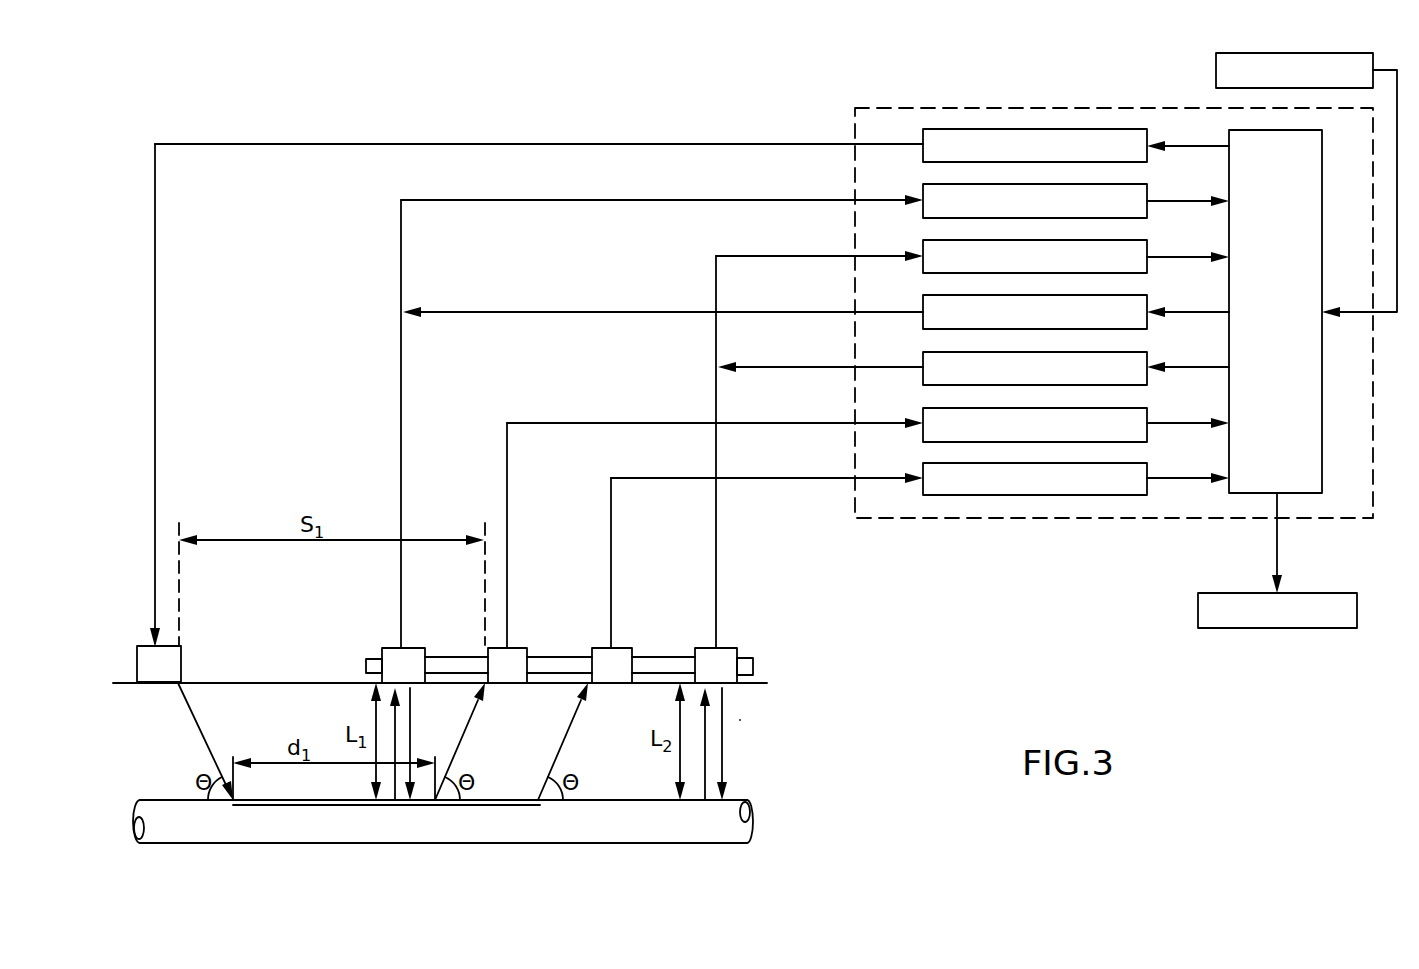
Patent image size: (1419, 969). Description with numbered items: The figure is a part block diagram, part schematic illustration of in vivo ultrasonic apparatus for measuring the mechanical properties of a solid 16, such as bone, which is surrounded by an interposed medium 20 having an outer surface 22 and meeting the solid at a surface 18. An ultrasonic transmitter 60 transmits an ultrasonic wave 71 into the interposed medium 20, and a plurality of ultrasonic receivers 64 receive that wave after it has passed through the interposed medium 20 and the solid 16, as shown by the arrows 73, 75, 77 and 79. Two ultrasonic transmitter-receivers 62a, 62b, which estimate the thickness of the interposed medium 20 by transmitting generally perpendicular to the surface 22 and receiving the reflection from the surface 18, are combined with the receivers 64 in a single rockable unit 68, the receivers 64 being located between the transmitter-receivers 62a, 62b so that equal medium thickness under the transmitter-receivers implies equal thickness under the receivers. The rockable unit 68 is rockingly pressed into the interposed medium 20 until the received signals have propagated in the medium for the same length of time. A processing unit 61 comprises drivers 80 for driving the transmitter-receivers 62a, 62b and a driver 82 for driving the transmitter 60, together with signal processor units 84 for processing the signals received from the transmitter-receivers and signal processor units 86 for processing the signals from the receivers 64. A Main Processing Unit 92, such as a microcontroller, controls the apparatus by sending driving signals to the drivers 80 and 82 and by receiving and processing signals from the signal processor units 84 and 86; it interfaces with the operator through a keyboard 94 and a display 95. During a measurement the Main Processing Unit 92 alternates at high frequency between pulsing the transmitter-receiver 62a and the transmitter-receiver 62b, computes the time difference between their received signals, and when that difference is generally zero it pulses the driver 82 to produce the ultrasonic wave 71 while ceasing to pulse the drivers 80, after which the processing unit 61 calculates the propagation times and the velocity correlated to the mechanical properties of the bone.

The solid 16 is at (752, 832).
The surface 18 is at (738, 798).
The interposed medium 20 is at (753, 735).
The surface of the interposed medium 22 is at (762, 683).
The ultrasonic transmitter 60 is at (183, 666).
The processing unit 61 is at (1062, 518).
The transmitter-receiver 62a is at (412, 650).
The transmitter-receiver 62b is at (737, 650).
The ultrasonic receivers 64 is at (528, 655).
The rockable unit 68 is at (753, 660).
The ultrasonic wave 71 is at (203, 748).
The arrow 73 is at (310, 806).
The arrow 75 is at (462, 748).
The arrow 77 is at (470, 806).
The arrow 79 is at (567, 748).
The drivers 80 is at (923, 297).
The driver 82 is at (927, 129).
The signal processor units 84 is at (923, 186).
The signal processor units 86 is at (923, 410).
The Main Processing Unit (MPU) 92 is at (1322, 480).
The keyboard 94 is at (1216, 72).
The display 95 is at (1198, 603).